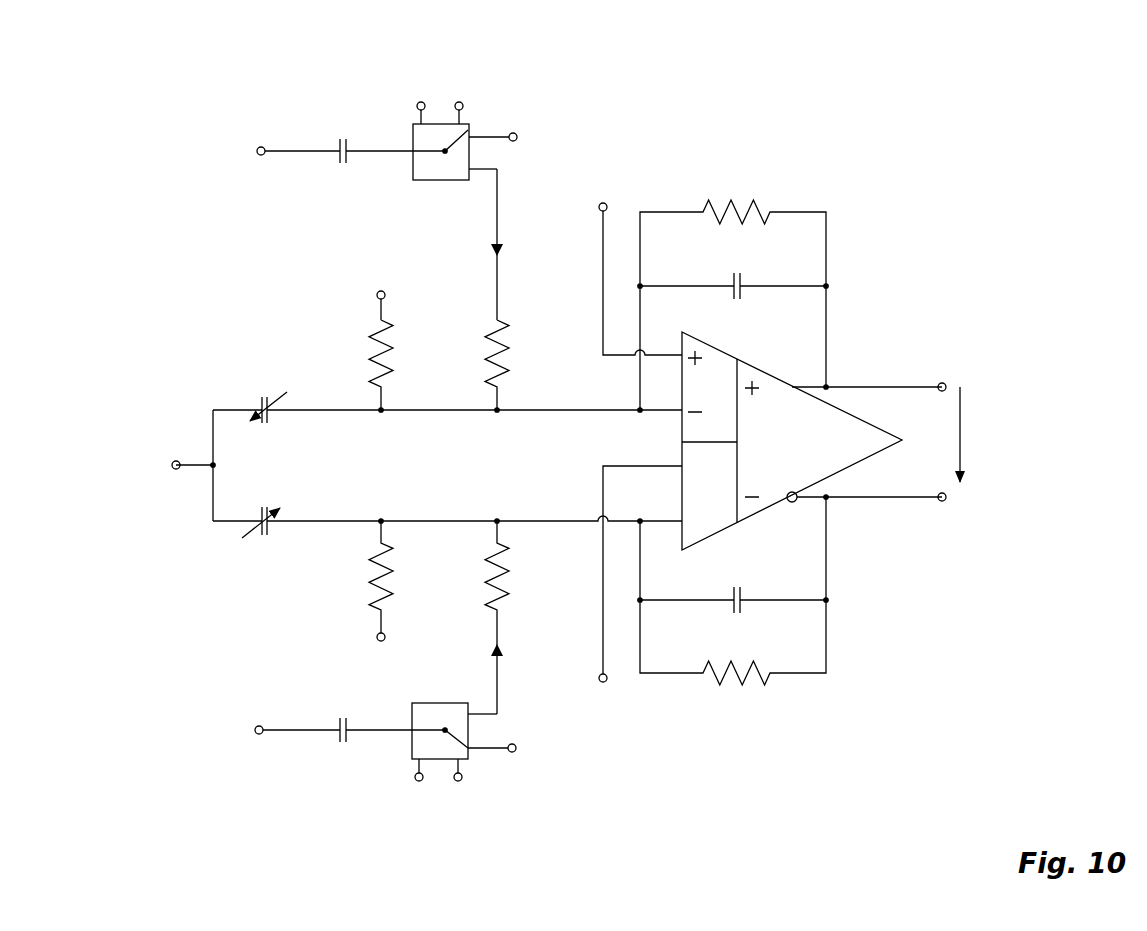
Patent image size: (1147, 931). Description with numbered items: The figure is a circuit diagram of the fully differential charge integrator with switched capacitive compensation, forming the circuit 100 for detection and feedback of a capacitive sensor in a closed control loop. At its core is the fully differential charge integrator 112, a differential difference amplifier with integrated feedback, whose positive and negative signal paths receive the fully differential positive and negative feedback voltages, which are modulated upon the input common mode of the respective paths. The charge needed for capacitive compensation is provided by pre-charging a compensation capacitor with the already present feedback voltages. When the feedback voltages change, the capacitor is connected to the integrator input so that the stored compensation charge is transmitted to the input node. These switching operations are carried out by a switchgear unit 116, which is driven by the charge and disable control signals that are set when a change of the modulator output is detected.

The circuit 100 is at (942, 675).
The fully differential charge integrator 112 is at (834, 473).
The switchgear unit 116 is at (470, 126).